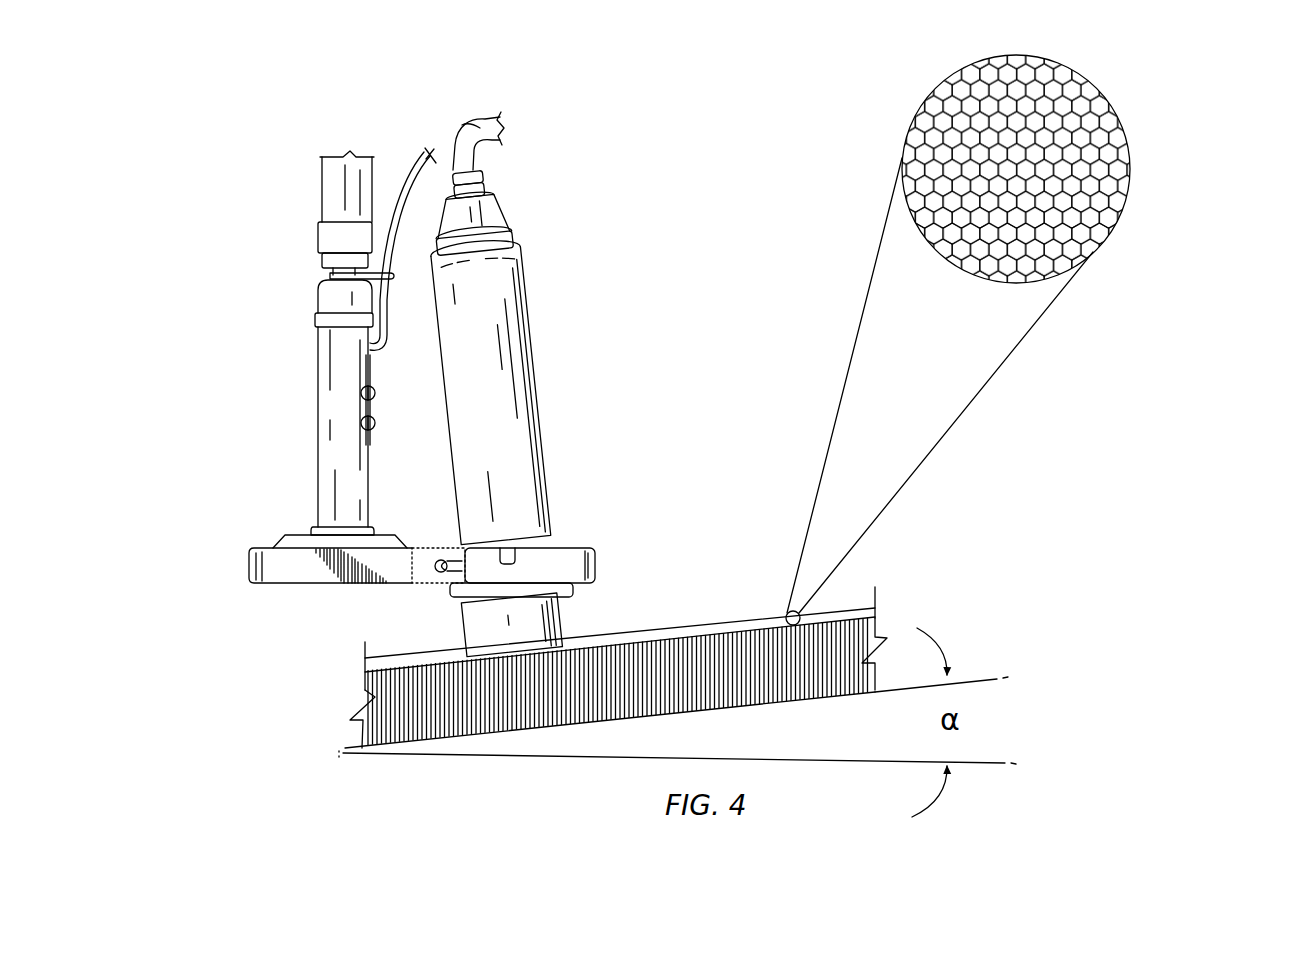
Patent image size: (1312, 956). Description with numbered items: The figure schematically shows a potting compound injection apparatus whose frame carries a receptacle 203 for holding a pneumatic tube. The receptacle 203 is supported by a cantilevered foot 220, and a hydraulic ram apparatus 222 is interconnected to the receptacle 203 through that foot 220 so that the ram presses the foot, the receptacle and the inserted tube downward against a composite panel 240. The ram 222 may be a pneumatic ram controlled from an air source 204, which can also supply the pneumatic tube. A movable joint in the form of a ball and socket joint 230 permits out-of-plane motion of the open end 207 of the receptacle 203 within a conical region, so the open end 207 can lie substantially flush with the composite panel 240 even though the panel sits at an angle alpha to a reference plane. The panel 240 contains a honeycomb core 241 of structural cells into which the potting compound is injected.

The receptacle 203 is at (520, 338).
The air source 204 is at (487, 108).
The open end of the receptacle 207 is at (527, 638).
The cantilevered foot 220 is at (278, 572).
The hydraulic ram apparatus 222 is at (333, 357).
The ball and socket joint 230 is at (428, 570).
The composite panel 240 is at (850, 612).
The honeycomb core 241 is at (1090, 183).